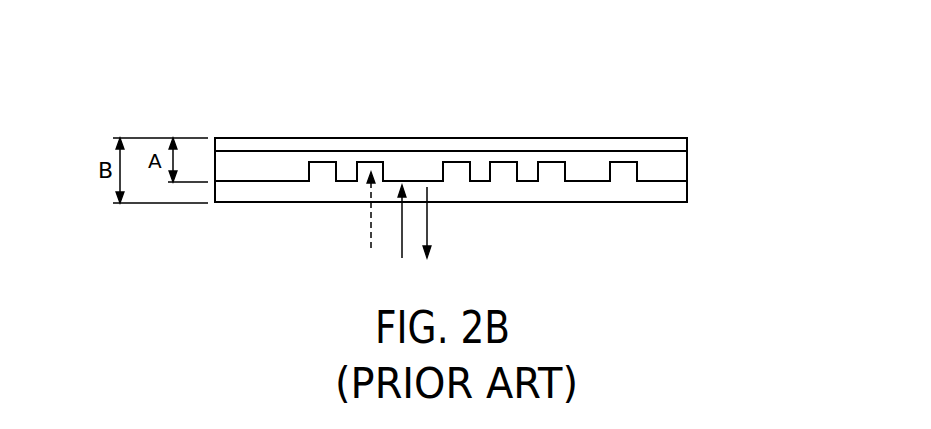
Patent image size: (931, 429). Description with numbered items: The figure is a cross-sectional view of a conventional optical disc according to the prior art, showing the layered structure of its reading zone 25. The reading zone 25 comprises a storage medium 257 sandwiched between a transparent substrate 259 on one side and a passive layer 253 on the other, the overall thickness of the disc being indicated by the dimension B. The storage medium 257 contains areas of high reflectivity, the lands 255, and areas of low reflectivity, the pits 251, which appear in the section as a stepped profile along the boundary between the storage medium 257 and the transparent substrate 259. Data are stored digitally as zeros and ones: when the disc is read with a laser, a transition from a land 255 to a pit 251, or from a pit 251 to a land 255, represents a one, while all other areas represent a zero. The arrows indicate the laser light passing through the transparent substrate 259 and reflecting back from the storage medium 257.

The reading zone 25 is at (312, 128).
The pit 251 is at (324, 180).
The passive layer 253 is at (467, 140).
The land 255 is at (267, 182).
The storage medium 257 is at (667, 160).
The transparent substrate 259 is at (667, 192).